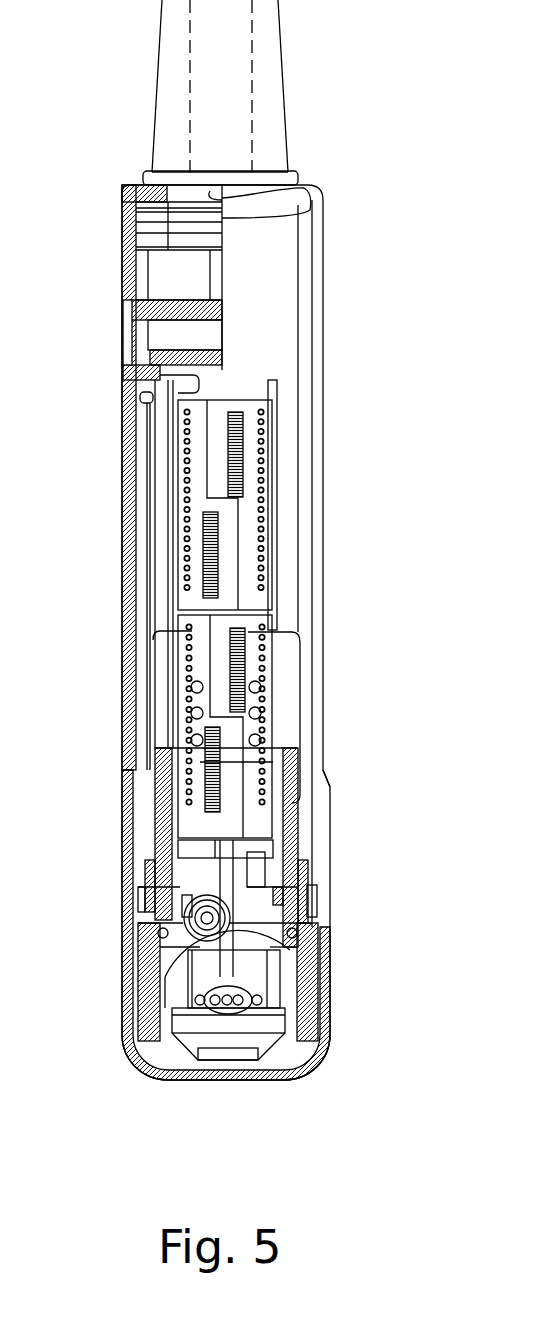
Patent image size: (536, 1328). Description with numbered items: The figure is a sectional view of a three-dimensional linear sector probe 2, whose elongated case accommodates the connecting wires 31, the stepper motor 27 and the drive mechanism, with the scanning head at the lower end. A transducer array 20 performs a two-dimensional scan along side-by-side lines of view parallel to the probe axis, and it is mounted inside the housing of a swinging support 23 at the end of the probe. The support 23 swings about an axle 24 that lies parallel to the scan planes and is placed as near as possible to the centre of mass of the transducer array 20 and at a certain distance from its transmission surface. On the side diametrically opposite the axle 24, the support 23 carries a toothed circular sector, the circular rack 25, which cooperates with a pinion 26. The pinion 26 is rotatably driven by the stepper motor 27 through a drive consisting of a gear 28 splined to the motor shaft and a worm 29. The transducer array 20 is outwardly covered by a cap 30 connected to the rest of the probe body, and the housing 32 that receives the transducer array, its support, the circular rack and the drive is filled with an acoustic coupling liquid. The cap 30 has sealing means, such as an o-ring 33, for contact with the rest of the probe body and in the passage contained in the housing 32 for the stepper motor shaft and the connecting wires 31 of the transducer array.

The housing 2 is at (326, 316).
The transducer array 20 is at (217, 1062).
The support 23 is at (282, 1038).
The axle 24 is at (265, 990).
The circular rack 25 is at (172, 976).
The pinion 26 is at (177, 903).
The stepper motor 27 is at (298, 827).
The gear 28 is at (245, 922).
The worm 29 is at (138, 940).
The cap 30 is at (280, 1080).
The connecting wires 31 is at (122, 463).
The housing 32 is at (183, 1055).
The o-ring 33 is at (295, 936).